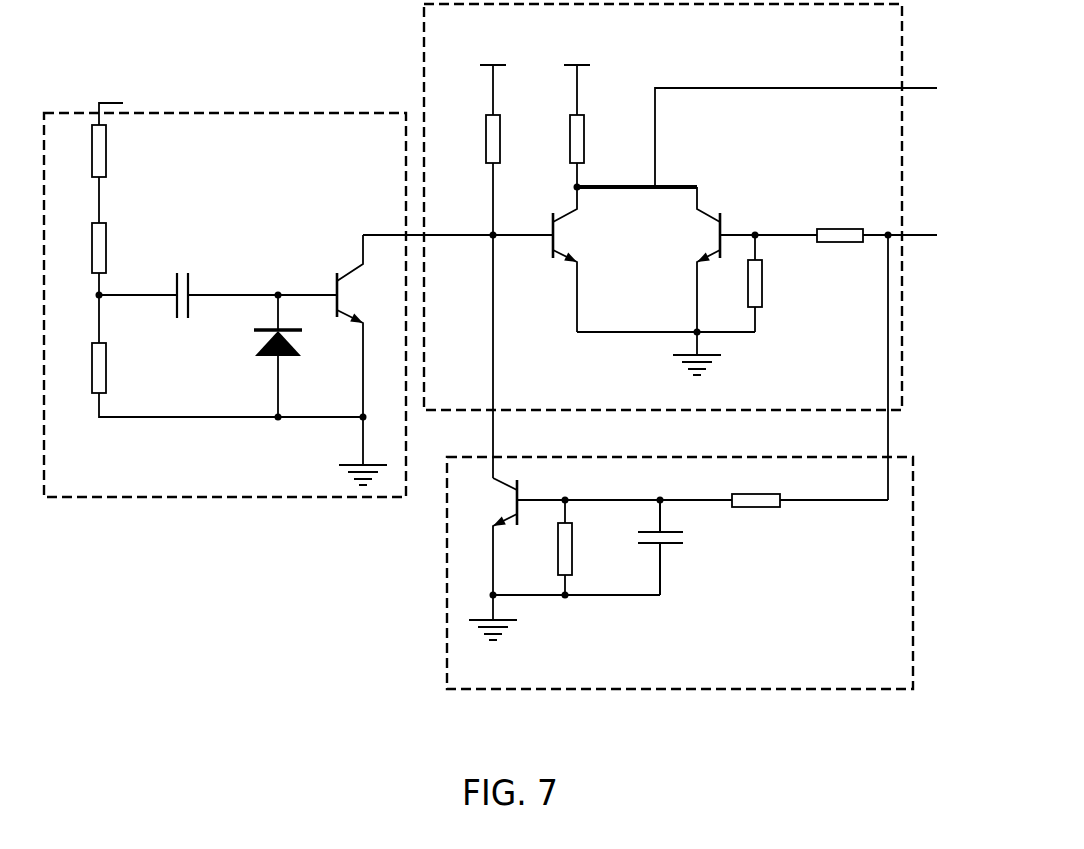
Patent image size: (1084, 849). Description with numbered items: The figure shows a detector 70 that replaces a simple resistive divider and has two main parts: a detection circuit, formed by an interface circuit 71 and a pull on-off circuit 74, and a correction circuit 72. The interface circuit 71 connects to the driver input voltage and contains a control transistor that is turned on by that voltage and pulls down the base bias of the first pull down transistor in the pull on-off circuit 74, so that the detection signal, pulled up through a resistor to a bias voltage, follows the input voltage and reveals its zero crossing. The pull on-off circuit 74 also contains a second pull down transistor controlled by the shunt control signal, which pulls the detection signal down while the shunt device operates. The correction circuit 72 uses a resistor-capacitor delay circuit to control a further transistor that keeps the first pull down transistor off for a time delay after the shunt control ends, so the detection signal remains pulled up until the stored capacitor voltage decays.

The detector 70 is at (429, 425).
The interface circuit 71 is at (134, 500).
The correction circuit 72 is at (688, 690).
The pull on-off circuit 74 is at (767, 410).